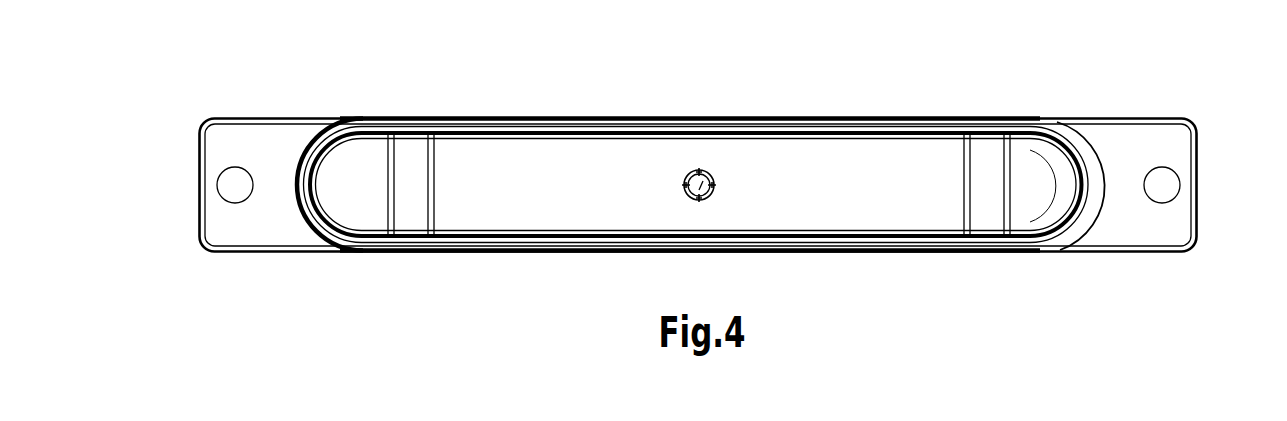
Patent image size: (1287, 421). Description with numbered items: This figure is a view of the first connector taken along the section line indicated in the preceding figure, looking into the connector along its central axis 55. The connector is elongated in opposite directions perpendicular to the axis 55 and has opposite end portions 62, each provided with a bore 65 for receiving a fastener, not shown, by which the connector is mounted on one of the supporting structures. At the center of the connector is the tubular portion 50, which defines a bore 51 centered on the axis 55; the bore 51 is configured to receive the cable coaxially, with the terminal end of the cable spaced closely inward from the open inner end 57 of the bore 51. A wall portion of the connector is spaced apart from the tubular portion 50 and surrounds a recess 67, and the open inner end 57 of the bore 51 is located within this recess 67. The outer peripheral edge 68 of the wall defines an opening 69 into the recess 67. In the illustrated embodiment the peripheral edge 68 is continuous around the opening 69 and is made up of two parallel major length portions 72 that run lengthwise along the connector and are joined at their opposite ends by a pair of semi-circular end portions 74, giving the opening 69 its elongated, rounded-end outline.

The tubular portion 50 is at (707, 172).
The bore 51 is at (685, 185).
The axis 55 is at (683, 173).
The open inner end 57 is at (712, 185).
The end portions 62 is at (232, 145).
The bores 65 is at (246, 210).
The recess 67 is at (513, 194).
The outer peripheral edge 68 is at (500, 249).
The opening 69 is at (557, 243).
The major length portions 72 is at (895, 128).
The semi-circular end portions 74 is at (307, 185).